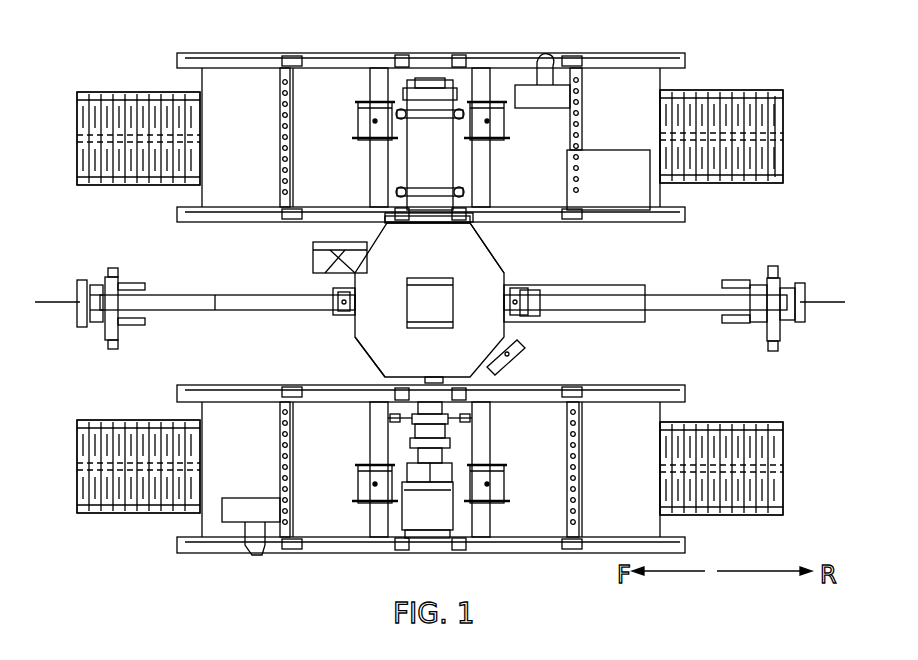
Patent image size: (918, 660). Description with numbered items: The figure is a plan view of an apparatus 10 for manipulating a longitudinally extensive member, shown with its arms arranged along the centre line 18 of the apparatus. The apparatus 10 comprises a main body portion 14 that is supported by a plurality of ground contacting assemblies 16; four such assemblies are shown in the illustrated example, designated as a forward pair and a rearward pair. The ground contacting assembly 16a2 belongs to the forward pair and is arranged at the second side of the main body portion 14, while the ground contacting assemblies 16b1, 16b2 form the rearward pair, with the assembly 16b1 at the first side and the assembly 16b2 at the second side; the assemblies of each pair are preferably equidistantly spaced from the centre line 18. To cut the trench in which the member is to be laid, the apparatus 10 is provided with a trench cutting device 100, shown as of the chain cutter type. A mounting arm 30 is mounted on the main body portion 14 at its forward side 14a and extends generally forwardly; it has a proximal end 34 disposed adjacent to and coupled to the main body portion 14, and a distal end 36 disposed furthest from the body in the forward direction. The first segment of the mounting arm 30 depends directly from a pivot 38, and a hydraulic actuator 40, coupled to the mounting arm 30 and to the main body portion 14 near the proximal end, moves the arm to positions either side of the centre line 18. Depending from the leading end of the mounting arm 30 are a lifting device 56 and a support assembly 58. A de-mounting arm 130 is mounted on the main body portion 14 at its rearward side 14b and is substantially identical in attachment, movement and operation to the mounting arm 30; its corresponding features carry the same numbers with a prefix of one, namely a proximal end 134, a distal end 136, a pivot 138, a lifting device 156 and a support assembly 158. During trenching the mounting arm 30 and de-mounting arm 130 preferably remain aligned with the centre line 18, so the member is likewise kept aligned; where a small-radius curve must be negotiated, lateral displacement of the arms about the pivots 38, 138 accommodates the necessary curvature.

The apparatus 10 is at (148, 538).
The main body portion 14 is at (483, 282).
The forward side 14a is at (353, 325).
The rearward side 14b is at (505, 262).
The ground contacting assemblies 16 is at (733, 90).
The ground contacting assembly 16a2 is at (88, 92).
The ground contacting assembly 16b1 is at (780, 166).
The ground contacting assembly 16b2 is at (777, 503).
The centre line 18 is at (65, 302).
The mounting arm 30 is at (240, 305).
The proximal end 34 is at (285, 290).
The distal end 36 is at (97, 325).
The pivot 38 is at (335, 310).
The hydraulic actuator 40 is at (312, 246).
The lifting device 56 is at (82, 288).
The support assembly 58 is at (122, 330).
The trench cutting device 100 is at (633, 290).
The de-mounting arm 130 is at (695, 300).
The proximal end 134 is at (540, 305).
The distal end 136 is at (760, 298).
The pivot 138 is at (545, 285).
The lifting device 156 is at (772, 278).
The support assembly 158 is at (745, 323).